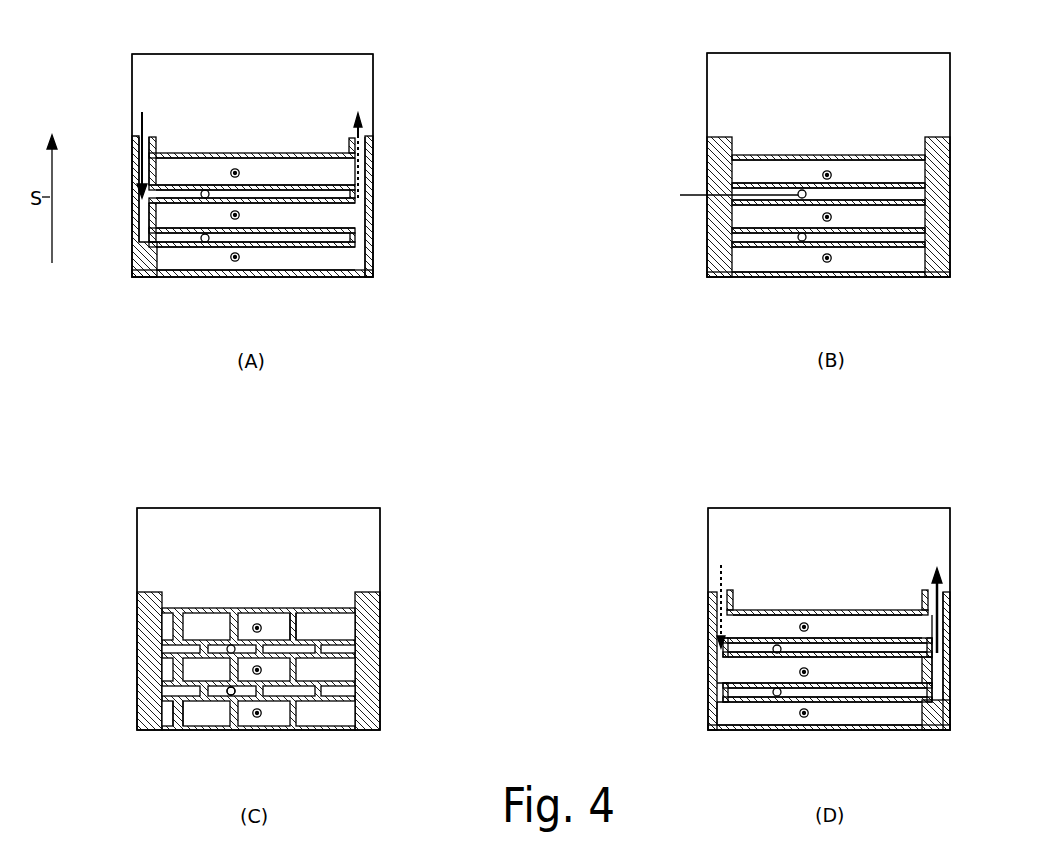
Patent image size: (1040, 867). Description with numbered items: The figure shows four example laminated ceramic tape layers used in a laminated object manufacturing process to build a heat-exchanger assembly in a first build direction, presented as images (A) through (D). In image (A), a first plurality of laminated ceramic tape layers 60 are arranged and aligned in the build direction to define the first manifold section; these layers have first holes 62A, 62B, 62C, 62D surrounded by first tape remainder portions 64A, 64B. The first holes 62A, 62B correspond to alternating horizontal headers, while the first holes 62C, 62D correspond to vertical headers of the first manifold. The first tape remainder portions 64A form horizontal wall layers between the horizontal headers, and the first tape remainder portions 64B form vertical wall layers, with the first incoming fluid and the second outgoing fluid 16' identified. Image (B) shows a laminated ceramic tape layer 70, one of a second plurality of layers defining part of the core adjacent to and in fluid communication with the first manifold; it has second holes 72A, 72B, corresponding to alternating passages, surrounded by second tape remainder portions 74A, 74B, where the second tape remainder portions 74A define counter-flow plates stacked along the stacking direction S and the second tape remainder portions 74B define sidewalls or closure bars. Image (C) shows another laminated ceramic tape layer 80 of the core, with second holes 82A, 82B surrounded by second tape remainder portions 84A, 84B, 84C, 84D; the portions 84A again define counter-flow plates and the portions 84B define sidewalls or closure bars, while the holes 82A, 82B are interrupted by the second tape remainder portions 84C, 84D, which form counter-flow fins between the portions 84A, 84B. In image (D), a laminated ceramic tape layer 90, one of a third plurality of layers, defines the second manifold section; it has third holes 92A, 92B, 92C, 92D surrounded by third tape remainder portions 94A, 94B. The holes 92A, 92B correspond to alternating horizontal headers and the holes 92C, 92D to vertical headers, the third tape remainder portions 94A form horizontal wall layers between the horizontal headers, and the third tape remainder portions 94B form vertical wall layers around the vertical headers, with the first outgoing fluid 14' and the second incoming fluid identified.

The first outgoing fluid 14' is at (799, 627).
The second outgoing fluid 16' is at (261, 215).
The first plurality of laminated ceramic tape layers 60 is at (392, 145).
The first hole 62A is at (348, 183).
The first hole 62B is at (173, 197).
The first hole 62C is at (146, 223).
The first hole 62D is at (360, 235).
The first tape remainder portion 64A is at (302, 185).
The first tape remainder portion 64B is at (142, 207).
The laminated ceramic tape layer 70 is at (901, 86).
The second hole 72A is at (789, 183).
The second hole 72B is at (898, 237).
The second tape remainder portion 74A is at (840, 155).
The second tape remainder portion 74B is at (718, 137).
The laminated ceramic tape layer 80 is at (329, 550).
The second hole 82A is at (220, 635).
The second hole 82B is at (282, 650).
The second tape remainder portion 84A is at (320, 700).
The second tape remainder portion 84B is at (150, 592).
The second tape remainder portion 84C is at (300, 628).
The second tape remainder portion 84D is at (185, 703).
The laminated ceramic tape layer 90 is at (797, 550).
The third hole 92A is at (895, 636).
The third hole 92B is at (898, 650).
The third hole 92C is at (718, 702).
The third hole 92D is at (935, 671).
The third tape remainder portion 94A is at (742, 640).
The third tape remainder portion 94B is at (925, 598).